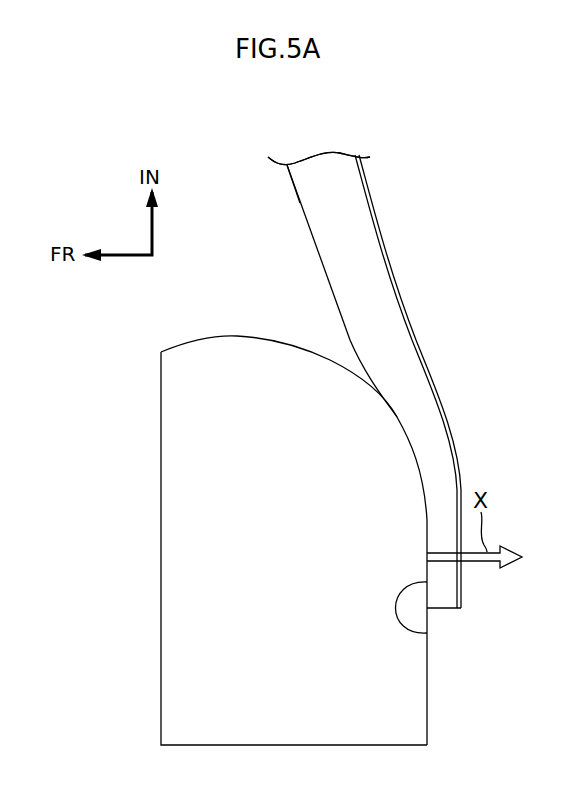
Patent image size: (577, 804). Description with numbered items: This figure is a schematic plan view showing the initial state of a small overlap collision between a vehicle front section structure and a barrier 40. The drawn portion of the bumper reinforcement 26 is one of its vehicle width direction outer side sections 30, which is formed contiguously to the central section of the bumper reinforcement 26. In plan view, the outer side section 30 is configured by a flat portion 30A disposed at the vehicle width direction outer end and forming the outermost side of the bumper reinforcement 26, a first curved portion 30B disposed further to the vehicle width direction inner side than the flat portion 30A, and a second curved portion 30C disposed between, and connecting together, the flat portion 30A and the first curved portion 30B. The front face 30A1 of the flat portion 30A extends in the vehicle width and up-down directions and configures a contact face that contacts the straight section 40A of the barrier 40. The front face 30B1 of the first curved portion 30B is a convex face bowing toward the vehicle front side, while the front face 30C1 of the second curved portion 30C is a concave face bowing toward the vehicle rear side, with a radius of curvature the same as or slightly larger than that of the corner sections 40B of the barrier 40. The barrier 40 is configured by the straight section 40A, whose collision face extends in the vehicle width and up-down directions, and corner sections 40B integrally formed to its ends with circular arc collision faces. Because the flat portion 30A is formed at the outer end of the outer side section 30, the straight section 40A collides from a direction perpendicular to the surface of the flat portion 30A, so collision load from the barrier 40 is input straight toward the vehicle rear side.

The bumper reinforcement 26 is at (285, 223).
The vehicle width direction outer side section 30 is at (384, 403).
The flat portion 30A is at (445, 590).
The front face of the flat portion 30A1 is at (427, 633).
The first curved portion 30B is at (378, 318).
The front face of the first curved portion 30B1 is at (343, 337).
The second curved portion 30C is at (427, 415).
The front face of the second curved portion 30C1 is at (392, 417).
The barrier 40 is at (299, 510).
The straight section 40A is at (427, 708).
The corner section 40B is at (265, 337).